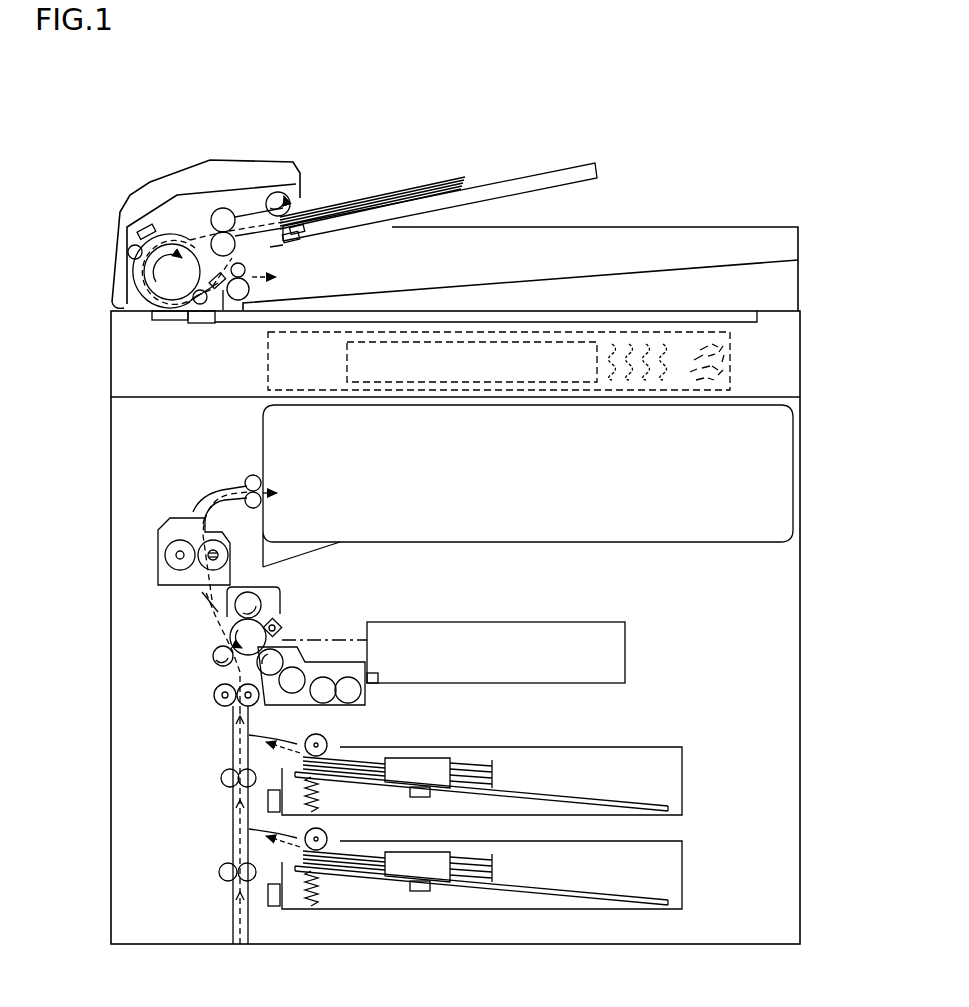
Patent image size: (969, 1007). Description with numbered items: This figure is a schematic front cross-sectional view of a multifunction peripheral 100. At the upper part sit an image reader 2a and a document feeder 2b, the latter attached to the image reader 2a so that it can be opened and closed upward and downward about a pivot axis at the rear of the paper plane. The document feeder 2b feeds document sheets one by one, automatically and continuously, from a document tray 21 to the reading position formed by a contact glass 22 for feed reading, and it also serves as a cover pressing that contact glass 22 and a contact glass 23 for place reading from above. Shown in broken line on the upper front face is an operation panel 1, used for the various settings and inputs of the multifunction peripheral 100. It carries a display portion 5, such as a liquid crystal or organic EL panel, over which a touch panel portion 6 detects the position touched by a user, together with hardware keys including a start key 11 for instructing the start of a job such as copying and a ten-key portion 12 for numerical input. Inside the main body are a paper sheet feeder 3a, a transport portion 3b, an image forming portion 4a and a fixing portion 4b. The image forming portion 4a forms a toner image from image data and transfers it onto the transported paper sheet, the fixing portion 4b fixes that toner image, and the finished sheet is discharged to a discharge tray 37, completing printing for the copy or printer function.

The multifunction peripheral 100 is at (805, 206).
The image reader 2a is at (804, 394).
The document feeder 2b is at (300, 163).
The document tray 21 is at (566, 178).
The contact glass for feed reading 22 is at (168, 325).
The contact glass for place reading 23 is at (457, 318).
The operation panel 1 is at (266, 362).
The display portion 5 is at (472, 404).
The touch panel portion 6 is at (445, 362).
The ten-key portion 12 is at (640, 390).
The start key 11 is at (705, 390).
The discharge tray 37 is at (518, 537).
The image forming portion 4a is at (322, 606).
The fixing portion 4b is at (156, 531).
The paper sheet feeder 3a is at (684, 802).
The transport portion 3b is at (226, 846).